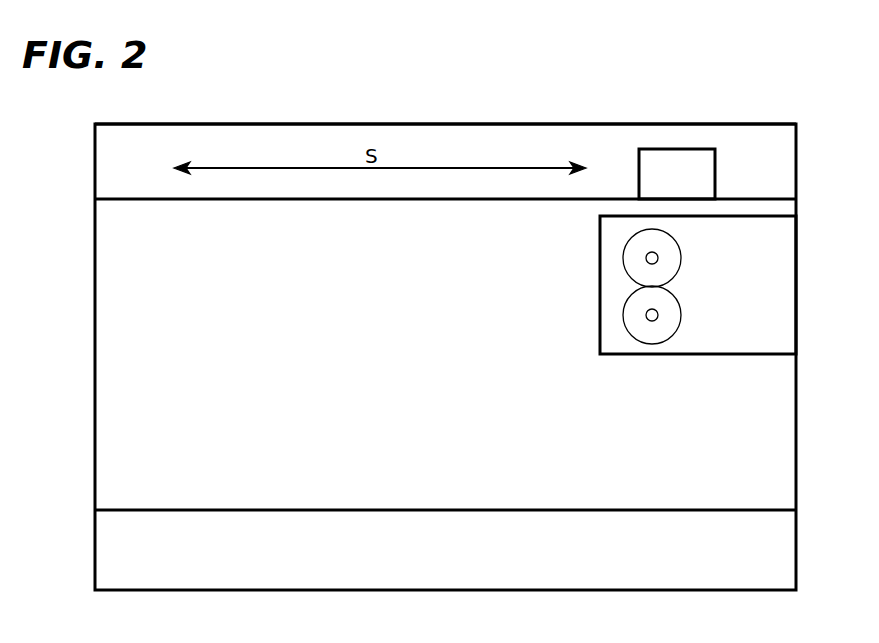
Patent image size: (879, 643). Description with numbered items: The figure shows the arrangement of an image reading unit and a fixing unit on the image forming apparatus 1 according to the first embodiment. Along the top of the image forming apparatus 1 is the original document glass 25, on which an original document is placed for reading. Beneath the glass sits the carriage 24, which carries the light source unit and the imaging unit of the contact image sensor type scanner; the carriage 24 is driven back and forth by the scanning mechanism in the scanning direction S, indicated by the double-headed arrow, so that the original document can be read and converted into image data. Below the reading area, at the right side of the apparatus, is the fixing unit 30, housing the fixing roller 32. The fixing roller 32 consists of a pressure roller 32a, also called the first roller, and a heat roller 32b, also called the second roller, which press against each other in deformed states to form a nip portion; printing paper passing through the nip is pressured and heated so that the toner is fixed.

The image forming apparatus 1 is at (596, 121).
The original document glass 25 is at (455, 123).
The carriage 24 is at (716, 172).
The fixing unit 30 is at (703, 355).
The fixing roller 32 is at (702, 283).
The pressure roller 32a is at (681, 258).
The heat roller 32b is at (681, 310).